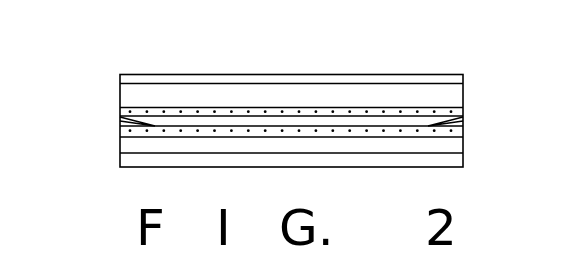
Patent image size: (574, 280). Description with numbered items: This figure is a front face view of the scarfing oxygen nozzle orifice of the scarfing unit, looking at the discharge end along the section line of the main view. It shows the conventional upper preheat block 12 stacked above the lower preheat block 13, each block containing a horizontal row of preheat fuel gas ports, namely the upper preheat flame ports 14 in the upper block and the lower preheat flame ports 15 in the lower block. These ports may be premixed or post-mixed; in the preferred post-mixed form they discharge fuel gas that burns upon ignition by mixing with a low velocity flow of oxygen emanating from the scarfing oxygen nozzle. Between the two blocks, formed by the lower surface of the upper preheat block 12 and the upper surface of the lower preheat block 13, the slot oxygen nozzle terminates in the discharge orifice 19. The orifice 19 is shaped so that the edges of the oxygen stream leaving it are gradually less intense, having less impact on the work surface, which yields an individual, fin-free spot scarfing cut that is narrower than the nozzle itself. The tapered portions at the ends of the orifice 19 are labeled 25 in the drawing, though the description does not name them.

The upper preheat block 12 is at (120, 94).
The lower preheat block 13 is at (120, 143).
The upper preheat flame ports 14 is at (432, 112).
The lower preheat flame ports 15 is at (432, 135).
The discharge orifice 19 is at (353, 122).
The wedge/sliver portion 25 is at (120, 119).